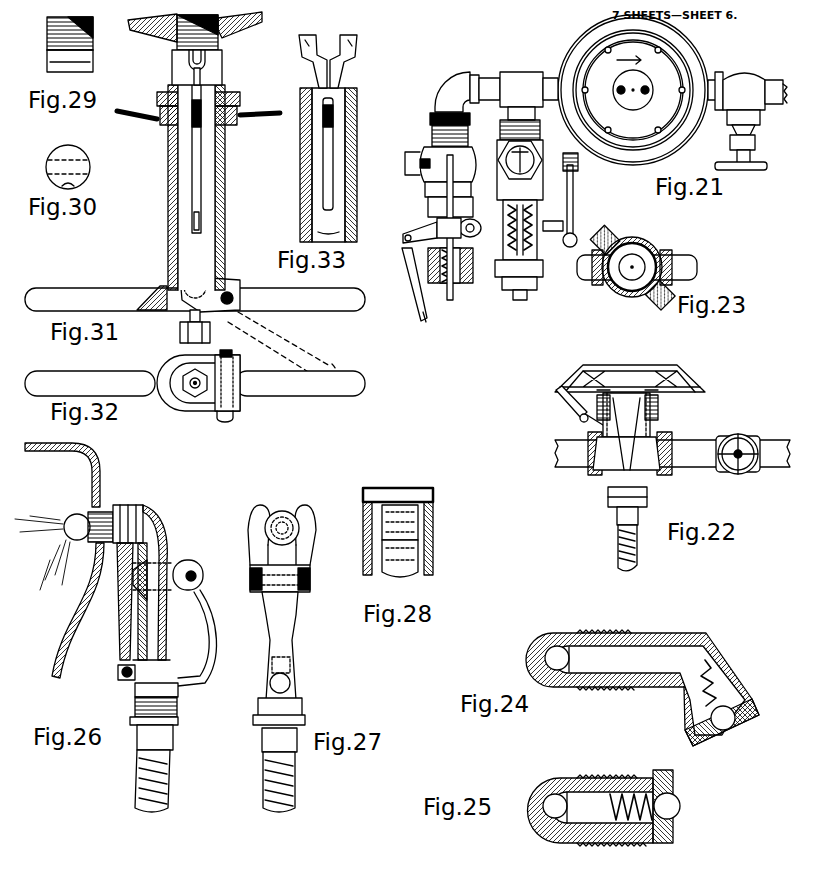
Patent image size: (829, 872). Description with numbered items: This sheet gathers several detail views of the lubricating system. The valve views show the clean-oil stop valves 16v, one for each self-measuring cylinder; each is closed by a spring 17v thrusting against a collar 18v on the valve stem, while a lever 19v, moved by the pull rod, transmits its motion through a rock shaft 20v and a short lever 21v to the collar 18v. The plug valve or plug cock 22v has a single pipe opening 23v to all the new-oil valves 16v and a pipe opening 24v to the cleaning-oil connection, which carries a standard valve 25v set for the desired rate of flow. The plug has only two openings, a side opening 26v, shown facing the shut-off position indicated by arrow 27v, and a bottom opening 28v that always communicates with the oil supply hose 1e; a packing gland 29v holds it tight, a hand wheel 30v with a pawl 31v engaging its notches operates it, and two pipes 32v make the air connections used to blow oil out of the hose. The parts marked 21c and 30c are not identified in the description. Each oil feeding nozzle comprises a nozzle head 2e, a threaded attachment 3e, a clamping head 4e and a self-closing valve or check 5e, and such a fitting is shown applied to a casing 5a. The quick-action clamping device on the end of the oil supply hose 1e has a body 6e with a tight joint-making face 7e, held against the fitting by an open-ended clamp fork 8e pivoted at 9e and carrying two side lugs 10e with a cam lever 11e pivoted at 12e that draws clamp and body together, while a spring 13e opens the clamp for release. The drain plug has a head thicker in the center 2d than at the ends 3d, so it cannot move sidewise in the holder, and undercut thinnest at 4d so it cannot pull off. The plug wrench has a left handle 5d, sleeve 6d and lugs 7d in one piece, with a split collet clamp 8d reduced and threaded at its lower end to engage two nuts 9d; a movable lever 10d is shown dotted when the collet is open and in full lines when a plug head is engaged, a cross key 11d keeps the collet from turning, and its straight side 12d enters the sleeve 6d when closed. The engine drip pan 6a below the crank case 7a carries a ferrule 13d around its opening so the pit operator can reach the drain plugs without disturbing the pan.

In FIG. 29, the center of drain plug head 2d is at (93, 62).
In FIG. 30, the center of drain plug head 2d is at (82, 178).
In FIG. 30, the ends of drain plug head 3d is at (55, 160).
In FIG. 31, the undercut of plug head 4d is at (207, 64).
In FIG. 31, the left handle 5d is at (43, 297).
In FIG. 31, the engine drip pan 6a is at (147, 118).
In FIG. 31, the sleeve 6d is at (168, 242).
In FIG. 31, the engine crank case 7a is at (168, 33).
In FIG. 32, the lugs 7d is at (240, 408).
In FIG. 31, the split collet clamp 8d is at (205, 186).
In FIG. 31, the nuts 9d is at (210, 338).
In FIG. 31, the movable lever 10d is at (325, 311).
In FIG. 33, the cross key 11d is at (330, 100).
In FIG. 33, the straight side of collet 12d is at (350, 63).
In FIG. 31, the ferrule 13d is at (232, 98).
In FIG. 21, the valve 16v is at (423, 147).
In FIG. 21, the spring 17v is at (437, 228).
In FIG. 21, the collar 18v is at (430, 205).
In FIG. 21, the lever 19v is at (575, 192).
In FIG. 21, the rock shaft 20v is at (555, 235).
In FIG. 21, the pointer 21c is at (569, 158).
In FIG. 21, the short lever 21v is at (477, 240).
In FIG. 23, the plug valve 22v is at (625, 287).
In FIG. 22, the plug valve 22v is at (630, 457).
In FIG. 21, the pipe opening 23v is at (552, 72).
In FIG. 23, the pipe opening 23v is at (597, 278).
In FIG. 22, the pipe opening 23v is at (557, 453).
In FIG. 21, the pipe opening 24v is at (712, 72).
In FIG. 23, the pipe opening 24v is at (687, 257).
In FIG. 22, the pipe opening 24v is at (693, 440).
In FIG. 21, the standard valve 25v is at (735, 80).
In FIG. 22, the standard valve 25v is at (728, 473).
In FIG. 22, the side port 26v is at (660, 463).
In FIG. 23, the arrow 27v is at (648, 242).
In FIG. 22, the bottom opening 28v is at (627, 480).
In FIG. 22, the packing gland 29v is at (660, 410).
In FIG. 21, the hand wheel 30v is at (584, 34).
In FIG. 22, the hand wheel 30v is at (690, 377).
In FIG. 21, the bracket 30c is at (404, 163).
In FIG. 22, the pawl 31v is at (568, 407).
In FIG. 23, the pipes 32v is at (622, 233).
In FIG. 22, the oil supply hose 1e is at (618, 553).
In FIG. 26, the oil supply hose 1e is at (167, 785).
In FIG. 27, the oil supply hose 1e is at (250, 773).
In FIG. 24, the nozzle head 2e is at (548, 640).
In FIG. 25, the nozzle head 2e is at (545, 785).
In FIG. 24, the threaded attachment 3e is at (612, 630).
In FIG. 25, the threaded attachment 3e is at (592, 780).
In FIG. 24, the clamping head 4e is at (685, 737).
In FIG. 25, the clamping head 4e is at (662, 770).
In FIG. 24, the self closing valve 5e is at (722, 733).
In FIG. 25, the self closing valve 5e is at (672, 798).
In FIG. 26, the casing 5a is at (88, 462).
In FIG. 26, the clamp device body 6e is at (177, 708).
In FIG. 27, the clamp device body 6e is at (250, 702).
In FIG. 26, the joint making face 7e is at (132, 507).
In FIG. 26, the clamp fork 8e is at (122, 627).
In FIG. 28, the clamp fork 8e is at (387, 490).
In FIG. 26, the pivot 9e is at (118, 673).
In FIG. 26, the side lugs 10e is at (135, 600).
In FIG. 27, the side lugs 10e is at (255, 593).
In FIG. 28, the side lugs 10e is at (430, 520).
In FIG. 26, the cam lever 11e is at (207, 640).
In FIG. 27, the cam lever 11e is at (278, 640).
In FIG. 28, the cam lever 11e is at (420, 550).
In FIG. 26, the pivot 12e is at (200, 570).
In FIG. 27, the pivot 12e is at (252, 580).
In FIG. 26, the spring 13e is at (147, 560).